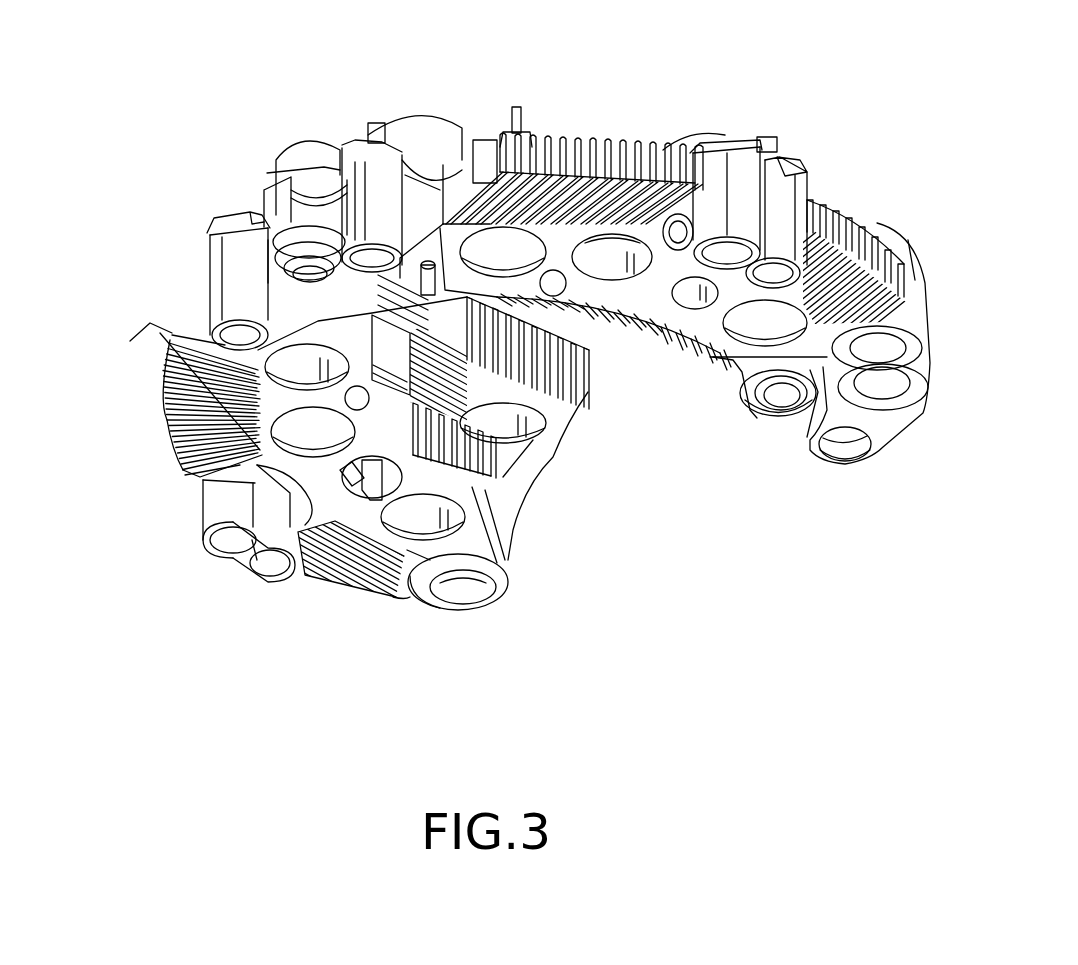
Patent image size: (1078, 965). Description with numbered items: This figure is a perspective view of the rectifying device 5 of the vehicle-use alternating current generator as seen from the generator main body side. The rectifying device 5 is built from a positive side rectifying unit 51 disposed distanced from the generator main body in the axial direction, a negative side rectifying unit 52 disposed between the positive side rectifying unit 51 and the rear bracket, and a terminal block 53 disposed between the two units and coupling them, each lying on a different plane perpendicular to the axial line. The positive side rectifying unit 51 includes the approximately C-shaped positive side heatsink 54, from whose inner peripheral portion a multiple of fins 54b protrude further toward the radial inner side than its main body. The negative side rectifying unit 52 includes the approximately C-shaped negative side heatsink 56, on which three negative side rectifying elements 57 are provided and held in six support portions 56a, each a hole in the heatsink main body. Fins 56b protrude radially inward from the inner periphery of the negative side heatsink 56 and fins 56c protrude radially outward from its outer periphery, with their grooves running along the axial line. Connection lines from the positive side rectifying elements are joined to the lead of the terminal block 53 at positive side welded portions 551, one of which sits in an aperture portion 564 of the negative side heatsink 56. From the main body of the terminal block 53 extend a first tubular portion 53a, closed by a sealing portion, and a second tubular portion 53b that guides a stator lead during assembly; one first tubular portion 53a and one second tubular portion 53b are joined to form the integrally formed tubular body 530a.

The rectifying device 5 is at (821, 670).
The positive side rectifying unit 51 is at (562, 442).
The negative side rectifying unit 52 is at (713, 357).
The terminal block 53 is at (280, 165).
The first tubular portion 53a is at (237, 267).
The second tubular portion 53b is at (383, 175).
The tubular body 530a is at (833, 63).
The positive side heatsink 54 is at (547, 417).
The fins 54b is at (562, 357).
The positive side welded portion 551 is at (425, 262).
The negative side heatsink 56 is at (170, 340).
The support portion 56a is at (368, 597).
The fins 56b is at (505, 485).
The fins 56c is at (168, 436).
The aperture portion 564 is at (362, 492).
The negative side rectifying element 57 is at (505, 243).